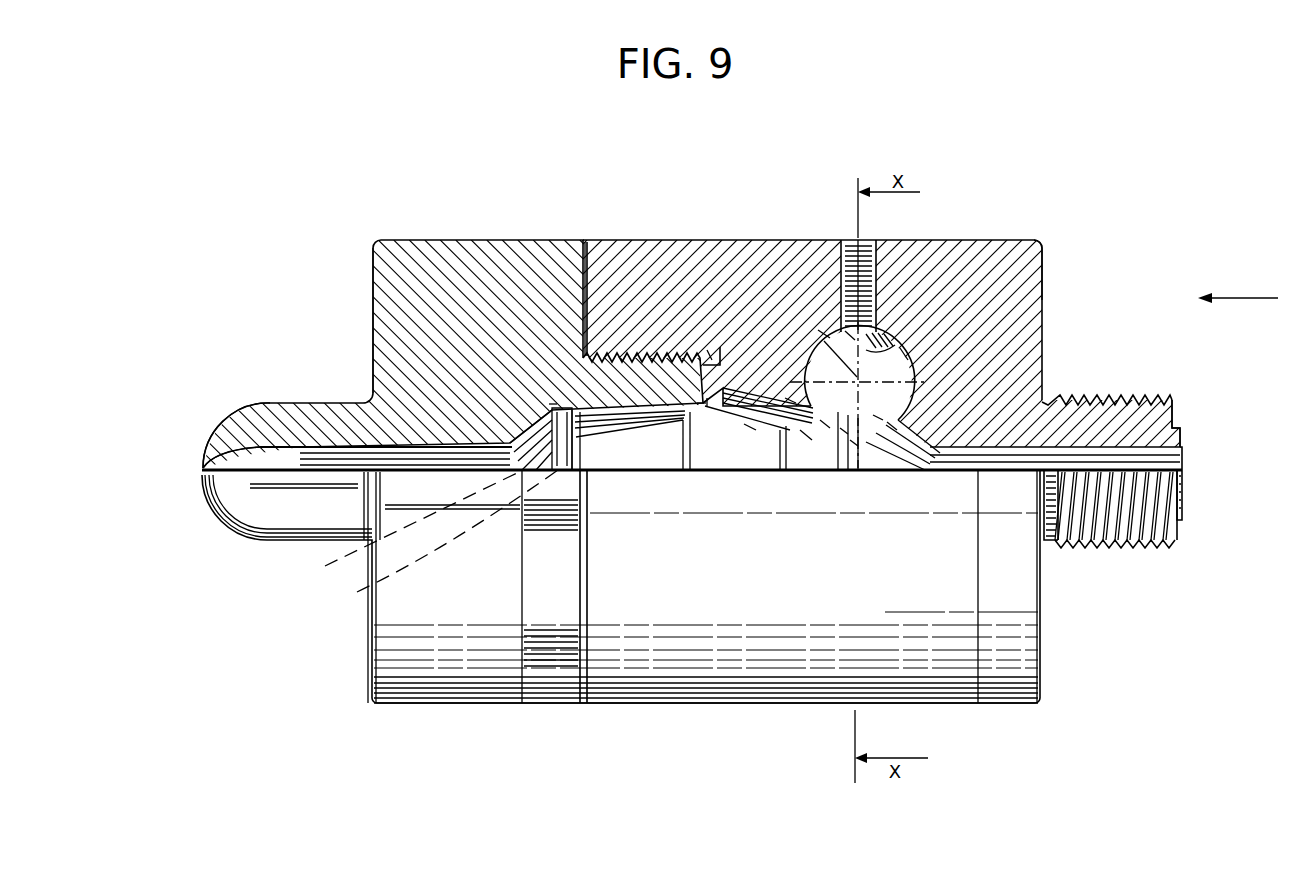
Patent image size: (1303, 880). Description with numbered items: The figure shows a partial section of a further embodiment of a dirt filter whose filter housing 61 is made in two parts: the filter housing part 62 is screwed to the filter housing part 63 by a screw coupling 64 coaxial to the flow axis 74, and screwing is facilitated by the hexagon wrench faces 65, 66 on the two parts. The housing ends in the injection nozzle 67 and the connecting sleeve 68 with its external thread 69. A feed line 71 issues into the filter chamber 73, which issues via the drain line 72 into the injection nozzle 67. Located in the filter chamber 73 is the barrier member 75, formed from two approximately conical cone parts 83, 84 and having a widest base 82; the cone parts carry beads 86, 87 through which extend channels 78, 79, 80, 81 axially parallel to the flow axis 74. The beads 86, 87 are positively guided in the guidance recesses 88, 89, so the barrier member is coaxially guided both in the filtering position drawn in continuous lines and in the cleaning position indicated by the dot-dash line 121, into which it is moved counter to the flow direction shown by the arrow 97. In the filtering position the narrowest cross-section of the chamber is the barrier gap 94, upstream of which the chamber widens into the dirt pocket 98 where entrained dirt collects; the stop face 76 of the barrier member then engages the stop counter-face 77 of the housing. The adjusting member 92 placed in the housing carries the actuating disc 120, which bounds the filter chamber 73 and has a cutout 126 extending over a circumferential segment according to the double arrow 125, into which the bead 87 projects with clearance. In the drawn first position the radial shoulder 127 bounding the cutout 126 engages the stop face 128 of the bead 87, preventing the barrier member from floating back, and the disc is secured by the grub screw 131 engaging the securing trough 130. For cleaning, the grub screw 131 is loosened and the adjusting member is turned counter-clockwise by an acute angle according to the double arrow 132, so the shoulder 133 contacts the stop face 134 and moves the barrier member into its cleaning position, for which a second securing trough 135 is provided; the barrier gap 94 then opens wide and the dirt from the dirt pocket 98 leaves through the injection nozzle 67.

The filter housing 61 is at (625, 238).
The filter housing part 62 is at (438, 264).
The filter housing part 63 is at (1016, 252).
The screw coupling 64 is at (628, 345).
The hexagon wrench face 65 is at (543, 672).
The hexagon wrench face 66 is at (1012, 695).
The injection nozzle 67 is at (203, 468).
The connecting sleeve 68 is at (1150, 420).
The external thread 69 is at (1136, 398).
The feed line 71 is at (1175, 462).
The drain line 72 is at (266, 404).
The filter chamber 73 is at (905, 425).
The flow axis 74 is at (1097, 492).
The barrier member 75 is at (748, 428).
The stop face 76 is at (540, 422).
The stop counter-face 77 is at (553, 405).
The channel 78 is at (845, 430).
The channel 79 is at (852, 445).
The channel 80 is at (406, 526).
The channel 81 is at (442, 542).
The widest base 82 is at (690, 472).
The cone part 83 is at (650, 458).
The cone part 84 is at (741, 458).
The bead 86 is at (562, 405).
The bead 87 is at (905, 405).
The guidance recess 88 is at (372, 297).
The guidance recess 89 is at (905, 390).
The adjusting member 92 is at (833, 341).
The barrier gap 94 is at (700, 404).
The arrow 97 is at (1243, 298).
The dirt pocket 98 is at (708, 400).
The actuating disc 120 is at (895, 343).
The dot-dash line 121 is at (905, 415).
The double arrow 125 is at (820, 326).
The cutout 126 is at (805, 432).
The radial shoulder 127 is at (878, 420).
The stop face 128 is at (892, 425).
The securing trough 130 is at (880, 322).
The grub screw 131 is at (843, 242).
The double arrow 132 is at (848, 332).
The shoulder 133 is at (790, 400).
The stop face 134 is at (825, 425).
The second securing trough 135 is at (922, 362).